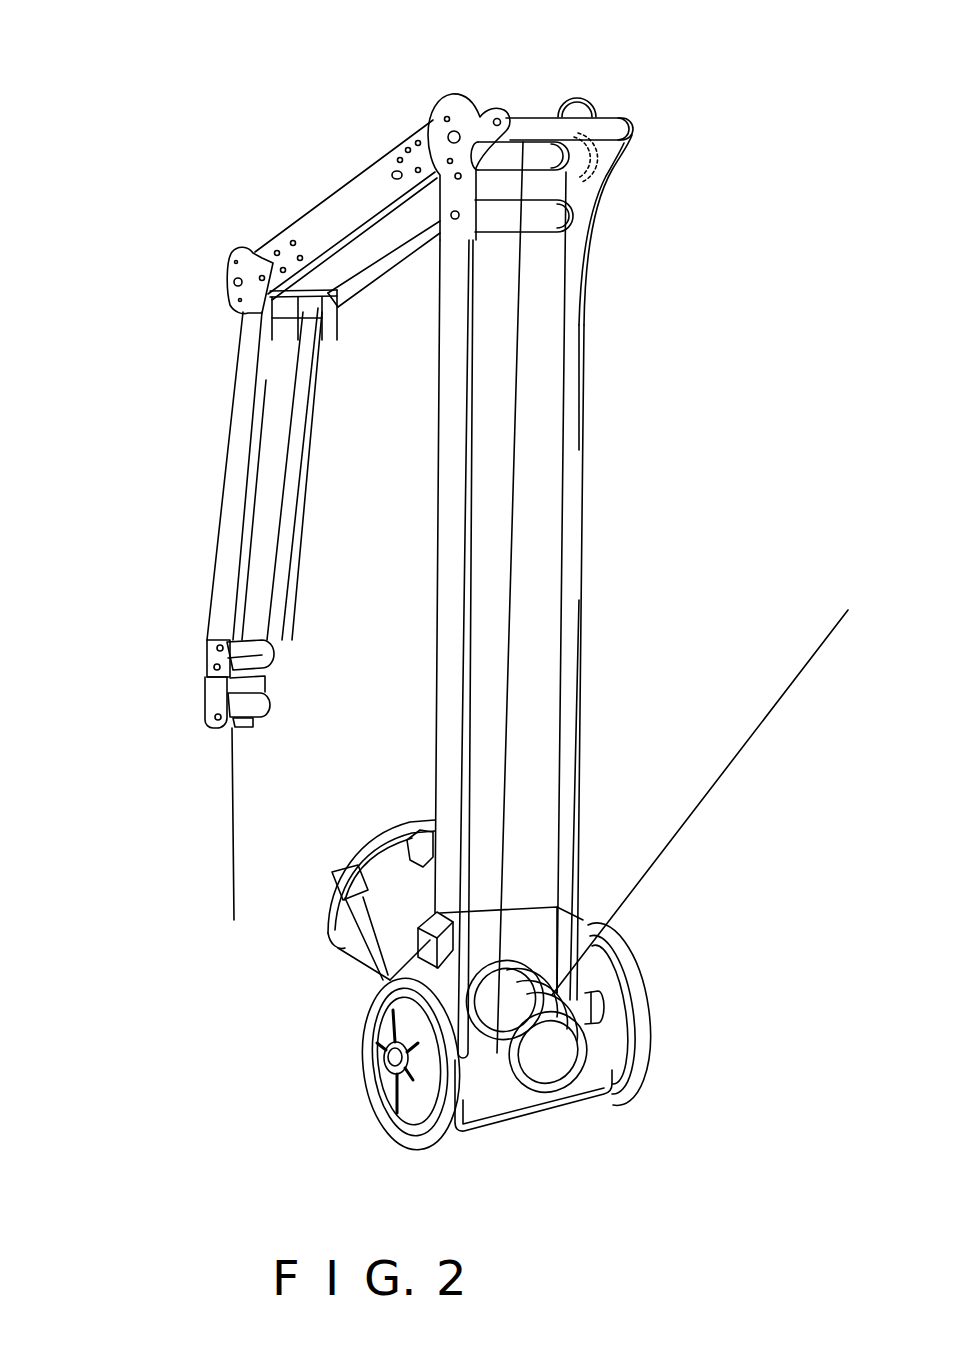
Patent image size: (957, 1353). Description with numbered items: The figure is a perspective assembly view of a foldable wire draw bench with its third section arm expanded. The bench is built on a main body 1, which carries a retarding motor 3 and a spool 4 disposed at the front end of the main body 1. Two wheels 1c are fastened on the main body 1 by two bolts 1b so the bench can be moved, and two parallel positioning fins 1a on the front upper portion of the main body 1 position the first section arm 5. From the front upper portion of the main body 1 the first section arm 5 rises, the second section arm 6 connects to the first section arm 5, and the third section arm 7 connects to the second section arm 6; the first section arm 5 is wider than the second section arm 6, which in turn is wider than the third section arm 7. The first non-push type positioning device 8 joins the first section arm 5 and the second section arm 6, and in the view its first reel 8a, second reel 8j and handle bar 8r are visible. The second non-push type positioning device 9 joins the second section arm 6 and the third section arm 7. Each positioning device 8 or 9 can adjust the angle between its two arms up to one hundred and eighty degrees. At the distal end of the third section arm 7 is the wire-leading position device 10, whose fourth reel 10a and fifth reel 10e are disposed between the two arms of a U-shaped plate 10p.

The main body 1 is at (473, 1117).
The positioning fins 1a is at (410, 943).
The bolts 1b is at (392, 1060).
The wheels 1c is at (368, 1022).
The retarding motor 3 is at (372, 869).
The spool 4 is at (552, 1067).
The first section arm 5 is at (550, 579).
The second section arm 6 is at (367, 183).
The third section arm 7 is at (234, 459).
The first non-push type positioning device 8 is at (463, 95).
The first reel 8a is at (547, 158).
The second reel 8j is at (553, 220).
The handle bar 8r is at (603, 130).
The second non-push type positioning device 9 is at (233, 271).
The wire-leading position device 10 is at (220, 695).
The fourth reel 10a is at (264, 696).
The fifth reel 10e is at (260, 663).
The U-shaped plate 10p is at (240, 726).